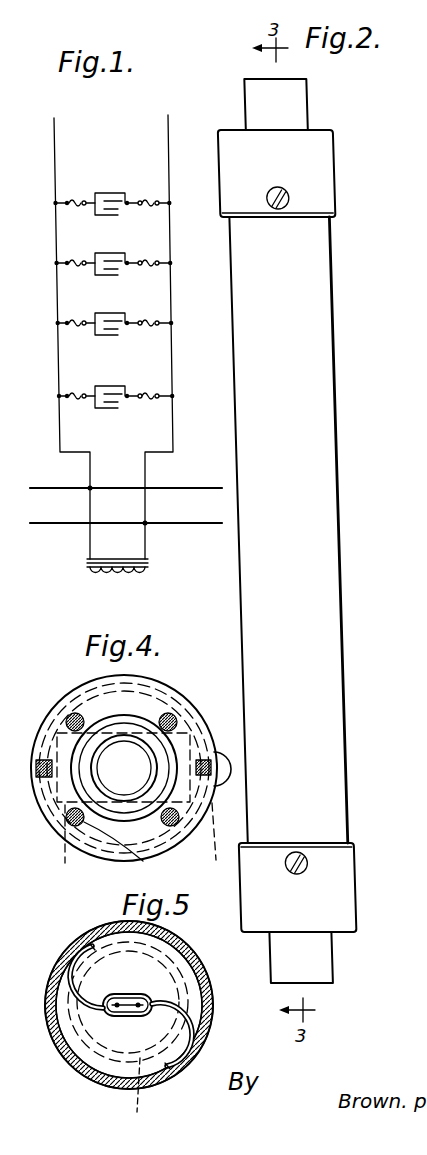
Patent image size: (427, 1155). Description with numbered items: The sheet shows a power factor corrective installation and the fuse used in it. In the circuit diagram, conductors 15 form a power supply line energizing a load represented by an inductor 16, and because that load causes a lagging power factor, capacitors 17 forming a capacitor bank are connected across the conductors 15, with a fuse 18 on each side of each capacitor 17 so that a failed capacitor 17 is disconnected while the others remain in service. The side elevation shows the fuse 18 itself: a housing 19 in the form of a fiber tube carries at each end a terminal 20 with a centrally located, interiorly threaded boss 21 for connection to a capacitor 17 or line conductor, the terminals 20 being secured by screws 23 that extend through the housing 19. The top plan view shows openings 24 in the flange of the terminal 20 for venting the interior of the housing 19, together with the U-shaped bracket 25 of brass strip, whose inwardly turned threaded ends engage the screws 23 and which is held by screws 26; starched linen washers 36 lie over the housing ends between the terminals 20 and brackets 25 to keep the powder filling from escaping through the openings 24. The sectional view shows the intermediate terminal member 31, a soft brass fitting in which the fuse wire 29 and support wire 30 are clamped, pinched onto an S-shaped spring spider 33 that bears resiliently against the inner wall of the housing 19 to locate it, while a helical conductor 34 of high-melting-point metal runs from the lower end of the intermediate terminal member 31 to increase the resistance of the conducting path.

In FIG. 1, the conductors 15 is at (184, 489).
In FIG. 1, the inductor 16 is at (128, 558).
In FIG. 1, the capacitors 17 is at (117, 384).
In FIG. 1, the fuse 18 is at (150, 388).
In FIG. 2, the fuse 18 is at (356, 367).
In FIG. 2, the housing 19 is at (333, 276).
In FIG. 5, the housing 19 is at (206, 976).
In FIG. 2, the terminal 20 is at (334, 173).
In FIG. 4, the terminal 20 is at (195, 836).
In FIG. 2, the boss 21 is at (309, 108).
In FIG. 4, the boss 21 is at (167, 747).
In FIG. 2, the screws 23 is at (290, 198).
In FIG. 4, the screws 23 is at (221, 753).
In FIG. 4, the openings 24 is at (70, 712).
In FIG. 4, the U-shaped bracket 25 is at (103, 855).
In FIG. 4, the screws 26 is at (134, 811).
In FIG. 5, the fuse wire 29 is at (138, 1022).
In FIG. 5, the support wire 30 is at (119, 1000).
In FIG. 5, the intermediate terminal member 31 is at (117, 1019).
In FIG. 5, the S-shaped spring spider 33 is at (110, 1015).
In FIG. 5, the conductor 34 is at (135, 1096).
In FIG. 4, the starched linen washers 36 is at (158, 720).